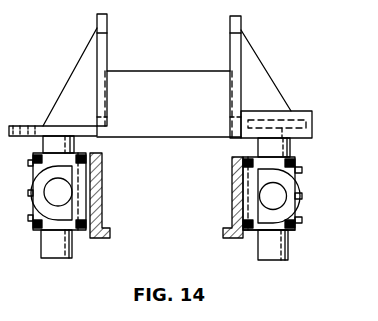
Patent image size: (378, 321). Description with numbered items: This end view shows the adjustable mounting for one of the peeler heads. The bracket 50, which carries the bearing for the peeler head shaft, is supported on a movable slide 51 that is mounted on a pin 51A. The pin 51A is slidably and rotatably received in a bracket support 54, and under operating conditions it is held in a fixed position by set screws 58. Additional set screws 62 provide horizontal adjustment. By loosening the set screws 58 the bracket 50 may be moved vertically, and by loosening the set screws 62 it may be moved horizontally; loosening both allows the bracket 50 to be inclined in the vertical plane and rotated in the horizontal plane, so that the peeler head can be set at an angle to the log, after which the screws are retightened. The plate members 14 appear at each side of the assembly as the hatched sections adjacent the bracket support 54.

The bracket 50 is at (153, 71).
The movable slide 51 is at (306, 125).
The pin 51A is at (288, 253).
The mounting plate 14 is at (107, 238).
The set screws 58 is at (302, 170).
The set screws 62 is at (302, 196).
The bracket support 54 is at (295, 231).